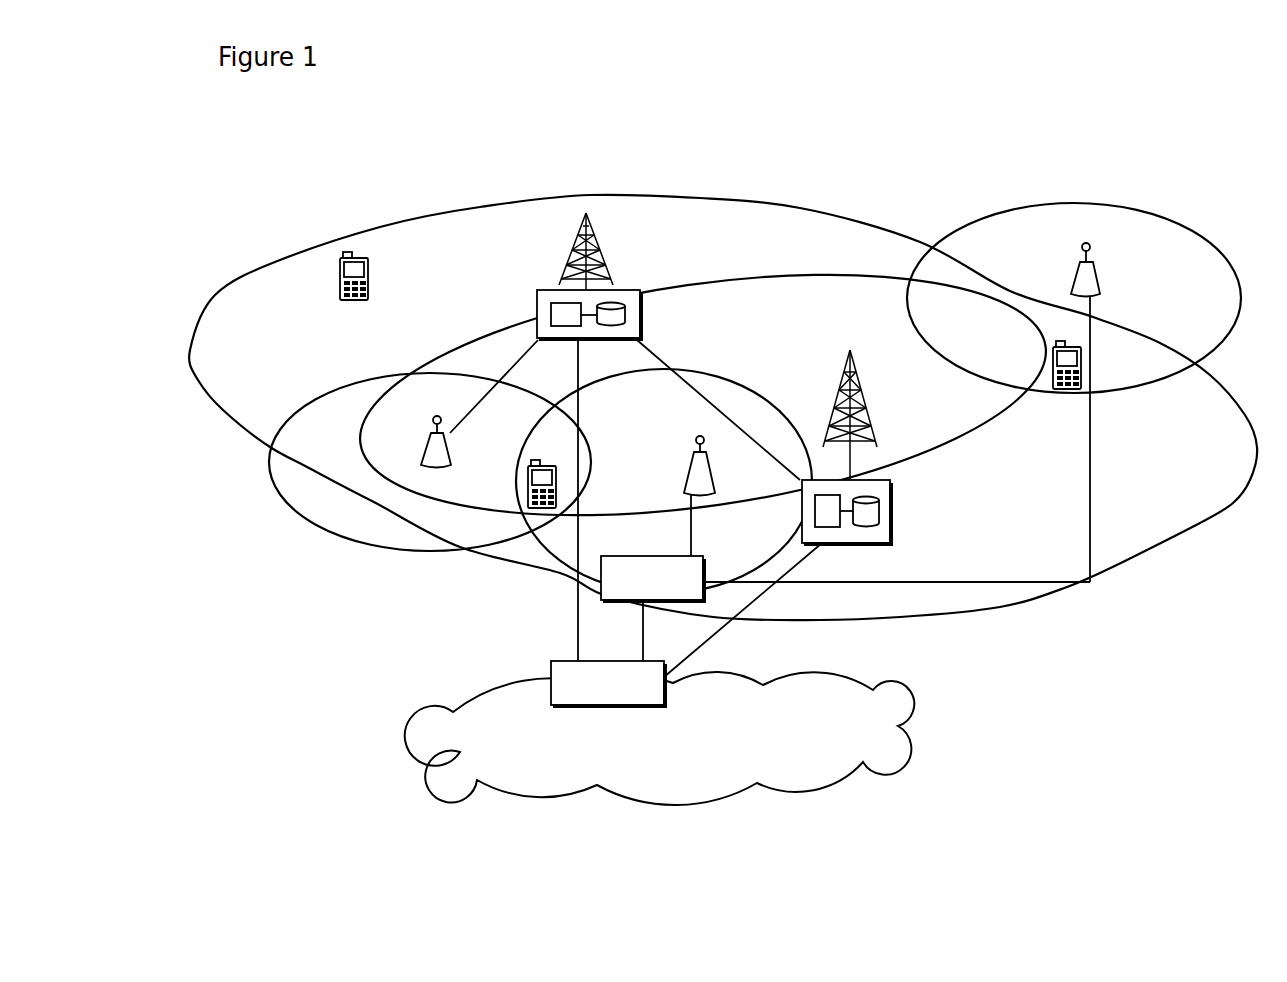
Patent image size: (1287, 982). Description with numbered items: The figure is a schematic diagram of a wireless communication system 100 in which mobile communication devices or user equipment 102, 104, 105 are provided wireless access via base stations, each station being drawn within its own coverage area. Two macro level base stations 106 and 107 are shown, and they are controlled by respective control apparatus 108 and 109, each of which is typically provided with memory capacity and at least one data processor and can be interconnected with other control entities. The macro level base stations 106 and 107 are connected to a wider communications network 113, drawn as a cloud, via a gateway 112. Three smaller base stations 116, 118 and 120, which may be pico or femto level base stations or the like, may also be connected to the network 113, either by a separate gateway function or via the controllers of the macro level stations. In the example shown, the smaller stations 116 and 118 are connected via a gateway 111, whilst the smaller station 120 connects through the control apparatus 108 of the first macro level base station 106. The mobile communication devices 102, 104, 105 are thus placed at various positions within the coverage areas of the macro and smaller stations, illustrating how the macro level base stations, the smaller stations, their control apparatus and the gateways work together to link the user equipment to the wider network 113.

The wireless communication system 100 is at (266, 234).
The mobile communication device 102 is at (335, 300).
The mobile communication device 104 is at (527, 487).
The mobile communication device 105 is at (1065, 388).
The macro level base station 106 is at (580, 275).
The macro level base station 107 is at (870, 415).
The control apparatus 108 is at (537, 305).
The control apparatus 109 is at (883, 535).
The gateway 111 is at (608, 583).
The gateway 112 is at (553, 662).
The wider communications network 113 is at (480, 715).
The smaller base station 116 is at (1073, 267).
The smaller base station 118 is at (698, 481).
The smaller base station 120 is at (425, 443).